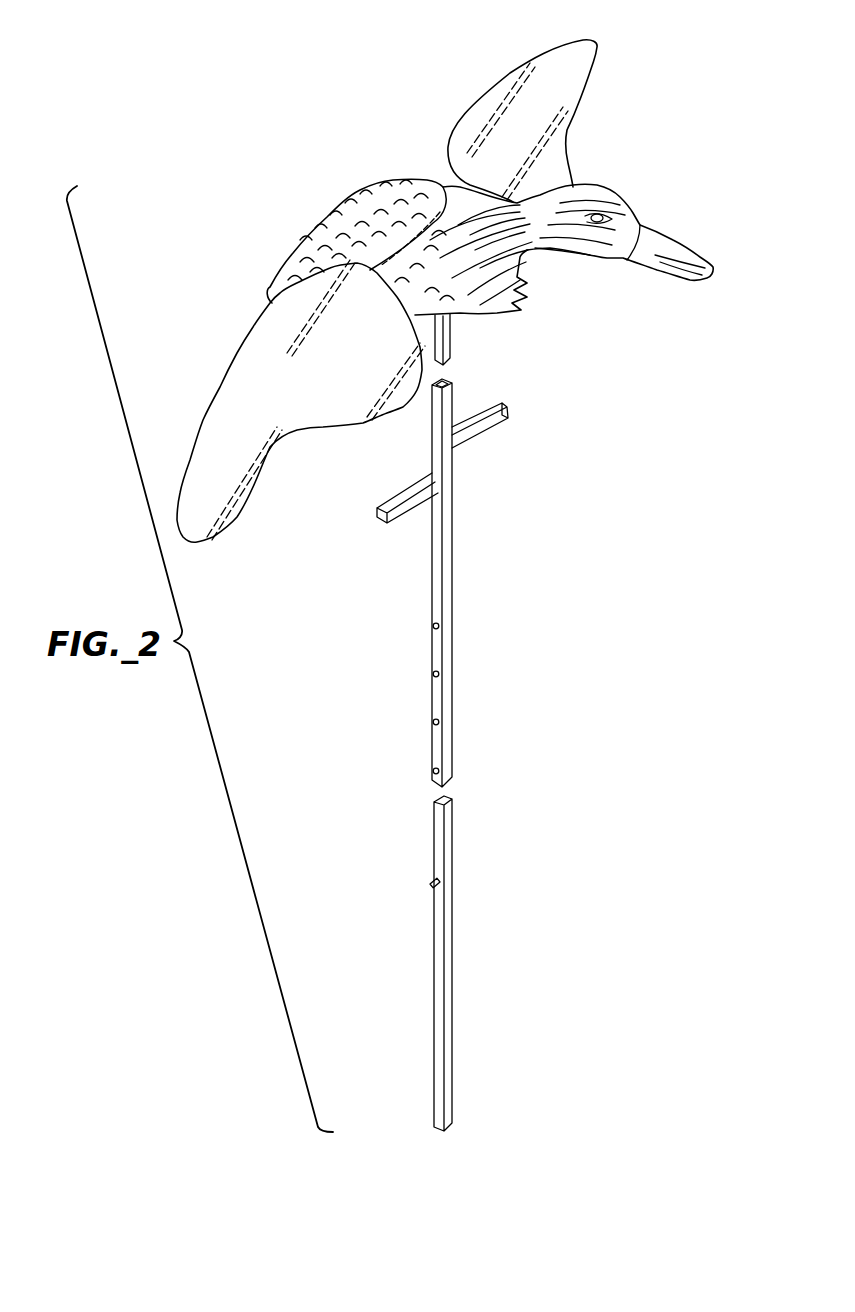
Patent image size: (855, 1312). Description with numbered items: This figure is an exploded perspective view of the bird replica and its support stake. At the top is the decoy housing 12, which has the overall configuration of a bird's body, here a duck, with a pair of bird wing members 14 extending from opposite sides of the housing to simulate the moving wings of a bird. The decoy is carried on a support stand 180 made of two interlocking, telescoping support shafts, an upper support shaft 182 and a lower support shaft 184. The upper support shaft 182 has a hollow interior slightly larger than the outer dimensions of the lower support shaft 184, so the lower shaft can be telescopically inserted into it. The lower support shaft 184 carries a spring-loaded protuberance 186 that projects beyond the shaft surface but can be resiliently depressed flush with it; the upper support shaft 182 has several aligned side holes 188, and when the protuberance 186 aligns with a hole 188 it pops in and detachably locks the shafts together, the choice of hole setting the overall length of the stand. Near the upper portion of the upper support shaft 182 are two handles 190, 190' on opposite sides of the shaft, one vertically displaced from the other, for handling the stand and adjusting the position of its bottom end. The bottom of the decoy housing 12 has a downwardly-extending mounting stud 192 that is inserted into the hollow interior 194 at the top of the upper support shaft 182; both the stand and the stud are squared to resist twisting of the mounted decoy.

The decoy housing 12 is at (327, 218).
The bird wing members 14 is at (470, 110).
The support stand 180 is at (304, 576).
The upper support shaft 182 is at (455, 503).
The lower support shaft 184 is at (453, 923).
The spring-loaded protuberance 186 is at (430, 882).
The side hole 188 is at (433, 675).
The handle 190 is at (386, 495).
The handle 190' is at (507, 430).
The mounting stud 192 is at (455, 343).
The hollow interior 194 is at (455, 377).